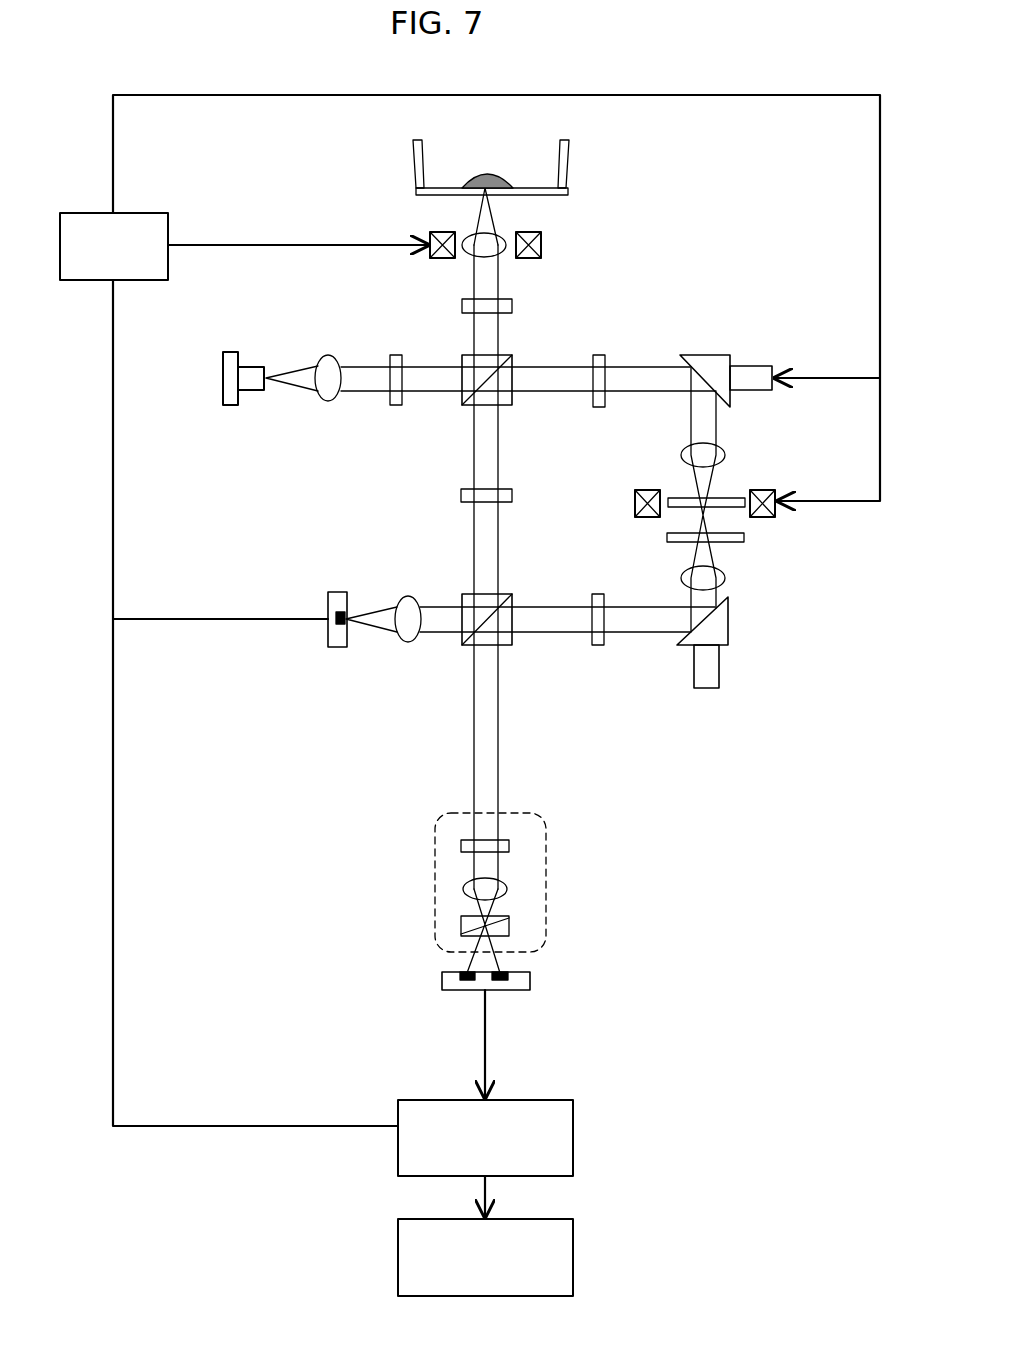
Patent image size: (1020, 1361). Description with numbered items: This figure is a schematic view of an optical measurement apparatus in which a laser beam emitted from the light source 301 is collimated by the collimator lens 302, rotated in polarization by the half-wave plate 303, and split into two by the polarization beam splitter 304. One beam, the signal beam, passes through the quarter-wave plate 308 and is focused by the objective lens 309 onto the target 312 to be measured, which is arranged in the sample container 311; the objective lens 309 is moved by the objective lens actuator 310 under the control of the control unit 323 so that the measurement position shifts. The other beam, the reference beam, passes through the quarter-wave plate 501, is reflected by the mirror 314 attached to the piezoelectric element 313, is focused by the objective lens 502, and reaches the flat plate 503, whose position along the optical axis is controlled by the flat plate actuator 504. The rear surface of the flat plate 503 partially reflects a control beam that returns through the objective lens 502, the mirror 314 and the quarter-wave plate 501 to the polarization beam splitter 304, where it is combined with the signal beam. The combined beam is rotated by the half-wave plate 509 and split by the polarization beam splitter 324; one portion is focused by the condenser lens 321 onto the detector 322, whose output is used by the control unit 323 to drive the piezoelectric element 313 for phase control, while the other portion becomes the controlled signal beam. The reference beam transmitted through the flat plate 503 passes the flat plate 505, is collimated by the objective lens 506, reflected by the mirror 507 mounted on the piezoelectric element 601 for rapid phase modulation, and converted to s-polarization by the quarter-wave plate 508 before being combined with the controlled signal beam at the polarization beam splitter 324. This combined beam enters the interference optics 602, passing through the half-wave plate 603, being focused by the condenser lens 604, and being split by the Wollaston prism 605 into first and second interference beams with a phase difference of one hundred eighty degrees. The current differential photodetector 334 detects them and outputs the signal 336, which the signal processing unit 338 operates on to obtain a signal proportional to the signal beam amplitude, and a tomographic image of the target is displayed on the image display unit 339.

The light source 301 is at (232, 352).
The collimator lens 302 is at (328, 355).
The λ/2 plate 303 is at (396, 405).
The polarization beam splitter 304 is at (512, 355).
The λ/4 plate 308 is at (462, 305).
The objective lens 309 is at (500, 240).
The objective lens actuator 310 is at (545, 246).
The sample container 311 is at (568, 165).
The target to be measured 312 is at (486, 178).
The piezoelectric element 313 is at (758, 366).
The mirror 314 is at (700, 355).
The condenser lens 321 is at (408, 596).
The detector 322 is at (338, 592).
The control unit 323 is at (150, 213).
The polarization beam splitter 324 is at (512, 594).
The current differential photodetector 334 is at (530, 978).
The signal 336 is at (488, 1040).
The signal processing unit 338 is at (558, 1100).
The image display unit 339 is at (558, 1219).
The λ/4 plate 501 is at (600, 355).
The objective lens 502 is at (725, 455).
The flat plate 503 is at (685, 498).
The flat plate actuator 504 is at (773, 490).
The flat plate 505 is at (745, 537).
The objective lens 506 is at (725, 578).
The mirror 507 is at (728, 623).
The λ/4 plate 508 is at (598, 645).
The λ/2 plate 509 is at (512, 493).
The piezoelectric element 601 is at (706, 688).
The interference optics 602 is at (435, 868).
The λ/2 plate 603 is at (509, 846).
The condenser lens 604 is at (507, 889).
The Wollaston prism 605 is at (509, 926).